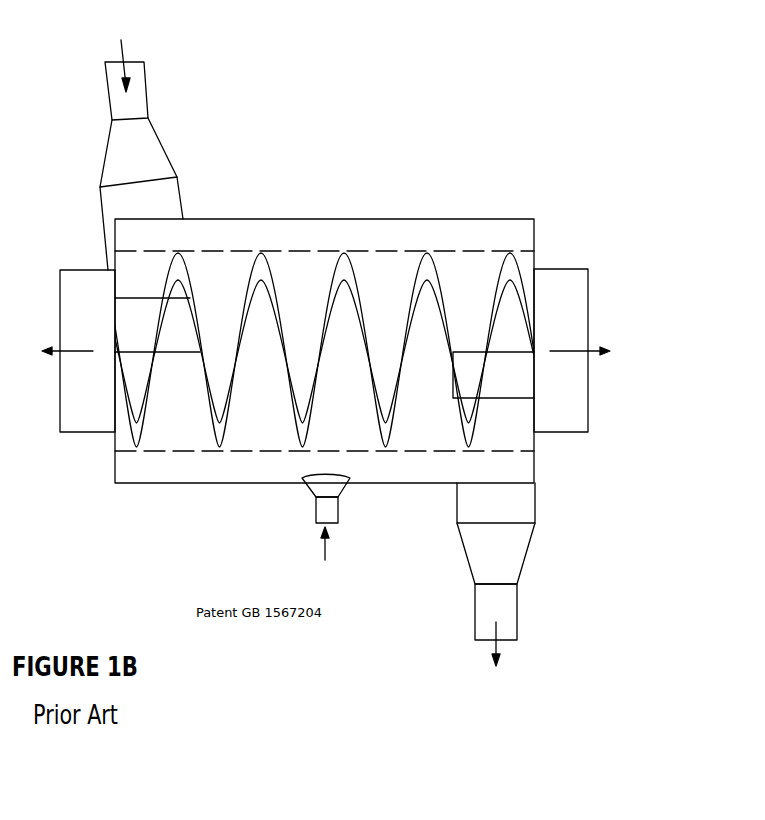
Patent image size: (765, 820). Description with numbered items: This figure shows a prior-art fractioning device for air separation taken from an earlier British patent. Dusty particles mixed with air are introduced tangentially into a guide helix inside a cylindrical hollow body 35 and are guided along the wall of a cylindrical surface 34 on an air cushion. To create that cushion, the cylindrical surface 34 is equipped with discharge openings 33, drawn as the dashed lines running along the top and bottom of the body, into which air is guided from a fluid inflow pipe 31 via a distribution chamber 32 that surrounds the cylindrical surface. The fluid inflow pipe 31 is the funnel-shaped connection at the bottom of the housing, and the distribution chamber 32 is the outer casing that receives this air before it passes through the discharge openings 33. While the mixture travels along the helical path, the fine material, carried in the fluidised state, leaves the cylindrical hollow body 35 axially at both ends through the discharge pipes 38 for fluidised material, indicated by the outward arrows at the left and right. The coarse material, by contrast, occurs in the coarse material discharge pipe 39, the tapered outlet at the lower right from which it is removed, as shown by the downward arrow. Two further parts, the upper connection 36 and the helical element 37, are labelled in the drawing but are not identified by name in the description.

The fluid inflow pipe 31 is at (315, 510).
The distribution chamber 32 is at (241, 470).
The discharge openings 33 is at (311, 250).
The cylindrical surface 34 is at (378, 250).
The cylindrical hollow body 35 is at (222, 290).
The gas outlet chimney 36 is at (143, 103).
The helical flight 37 is at (447, 268).
The discharge pipes for fluidised material 38 is at (87, 420).
The coarse material discharge pipe 39 is at (477, 611).